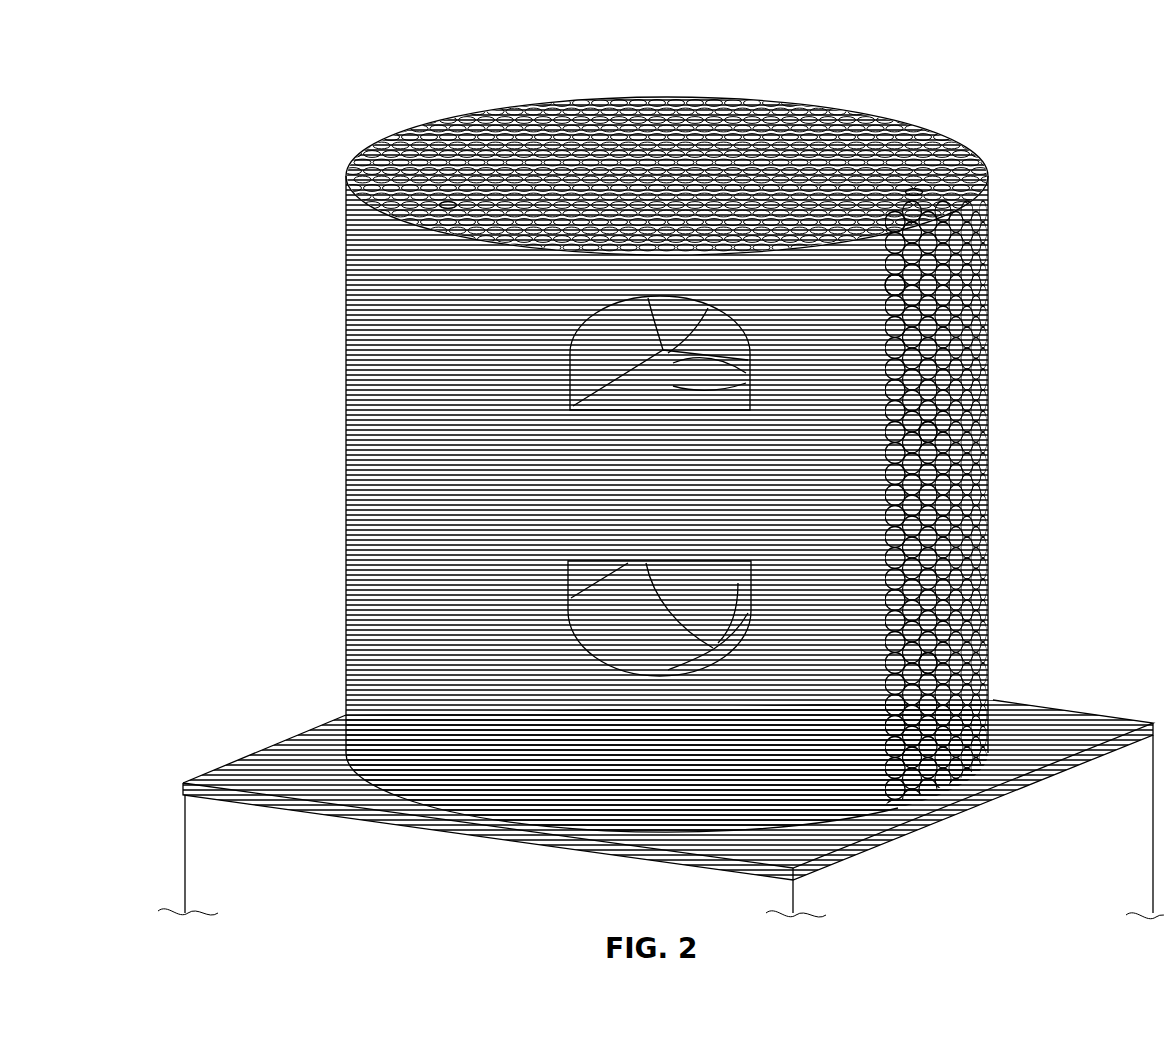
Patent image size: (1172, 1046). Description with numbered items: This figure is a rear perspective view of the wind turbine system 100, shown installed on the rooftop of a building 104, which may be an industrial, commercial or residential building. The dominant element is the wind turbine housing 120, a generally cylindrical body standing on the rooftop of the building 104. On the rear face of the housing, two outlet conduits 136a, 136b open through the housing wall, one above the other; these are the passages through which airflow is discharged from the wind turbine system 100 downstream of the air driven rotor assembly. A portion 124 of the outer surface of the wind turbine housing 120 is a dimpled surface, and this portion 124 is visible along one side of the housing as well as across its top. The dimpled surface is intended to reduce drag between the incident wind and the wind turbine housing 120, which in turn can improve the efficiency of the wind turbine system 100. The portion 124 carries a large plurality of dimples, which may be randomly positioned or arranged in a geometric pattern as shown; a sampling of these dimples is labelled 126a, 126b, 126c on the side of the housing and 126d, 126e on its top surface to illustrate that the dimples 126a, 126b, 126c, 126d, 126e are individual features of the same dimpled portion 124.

The wind turbine system 100 is at (364, 88).
The building 104 is at (270, 859).
The wind turbine housing 120 is at (380, 247).
The portion of outer surface of wind turbine housing 124 is at (997, 441).
The dimple 126a is at (905, 270).
The dimple 126b is at (925, 410).
The dimple 126c is at (920, 646).
The dimple 126d is at (443, 190).
The dimple 126e is at (910, 178).
The outlet conduit 136a is at (618, 350).
The outlet conduit 136b is at (650, 612).